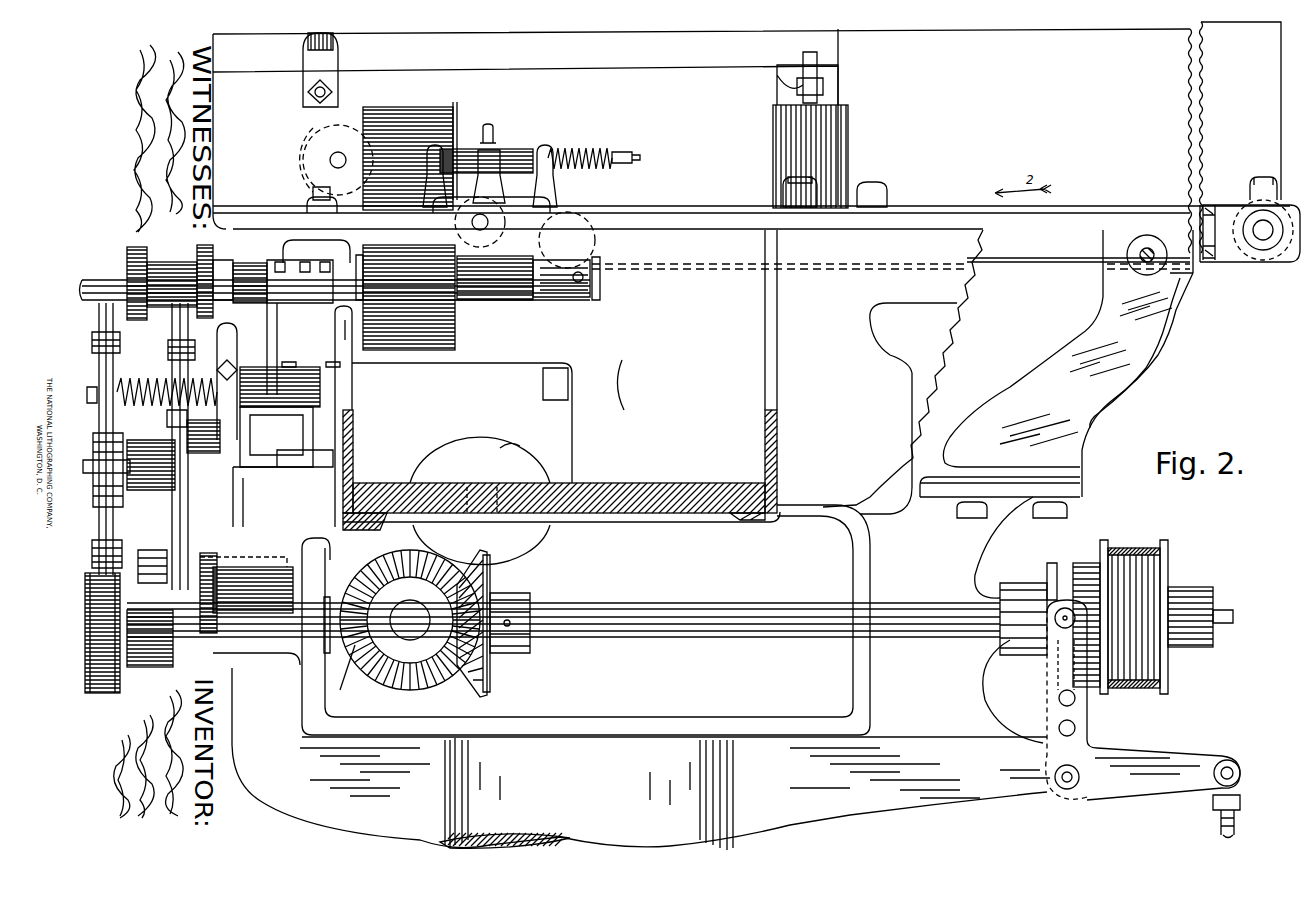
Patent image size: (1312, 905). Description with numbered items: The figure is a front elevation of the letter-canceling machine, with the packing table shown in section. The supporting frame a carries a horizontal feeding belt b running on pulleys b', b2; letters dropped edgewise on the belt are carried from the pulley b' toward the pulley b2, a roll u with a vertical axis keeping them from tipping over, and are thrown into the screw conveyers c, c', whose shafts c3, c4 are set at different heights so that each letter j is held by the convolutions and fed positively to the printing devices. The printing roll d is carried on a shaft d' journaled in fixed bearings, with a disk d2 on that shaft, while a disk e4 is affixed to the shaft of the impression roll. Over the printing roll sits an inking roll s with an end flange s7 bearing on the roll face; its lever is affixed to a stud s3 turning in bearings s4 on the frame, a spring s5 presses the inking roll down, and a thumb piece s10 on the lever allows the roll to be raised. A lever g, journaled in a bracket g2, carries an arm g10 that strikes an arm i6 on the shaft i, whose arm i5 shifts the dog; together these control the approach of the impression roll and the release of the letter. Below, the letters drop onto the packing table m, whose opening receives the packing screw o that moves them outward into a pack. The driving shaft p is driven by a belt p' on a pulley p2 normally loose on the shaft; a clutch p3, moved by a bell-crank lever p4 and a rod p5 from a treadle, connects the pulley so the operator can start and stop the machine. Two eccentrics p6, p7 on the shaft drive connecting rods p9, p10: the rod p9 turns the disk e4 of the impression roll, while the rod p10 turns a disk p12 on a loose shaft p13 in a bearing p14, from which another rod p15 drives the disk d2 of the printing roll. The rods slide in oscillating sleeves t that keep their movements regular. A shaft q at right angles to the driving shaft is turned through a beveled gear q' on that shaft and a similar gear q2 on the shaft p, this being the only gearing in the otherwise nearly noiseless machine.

The supporting frame a is at (1056, 486).
The feeding belt b is at (751, 360).
The belt pulley b' is at (1252, 221).
The belt-carrying pulley b2 is at (600, 262).
The screw conveyer c is at (567, 228).
The screw conveyer c' is at (287, 154).
The screw shaft c3 is at (456, 223).
The screw shaft c4 is at (340, 150).
The printing roll d is at (335, 295).
The printing roll shaft d' is at (355, 344).
The disk d2 is at (198, 252).
The disk e4 is at (129, 255).
The lever g is at (288, 383).
The bracket g2 is at (160, 378).
The arm g10 is at (262, 371).
The shaft i is at (300, 337).
The arm i5 is at (333, 362).
The arm i6 is at (288, 362).
The letter j is at (525, 370).
The packing table m is at (620, 492).
The packing screw o is at (520, 448).
The driving shaft p is at (587, 613).
The belt p' is at (1134, 601).
The pulley p2 is at (1175, 592).
The clutch p3 is at (1085, 565).
The bell-crank lever p4 is at (1090, 736).
The rod p5 is at (1213, 818).
The eccentric p6 is at (100, 693).
The eccentric p7 is at (160, 550).
The connecting rod p9 is at (115, 362).
The connecting rod p10 is at (150, 668).
The disk p12 is at (235, 540).
The loose shaft p13 is at (230, 567).
The bearing p14 is at (293, 570).
The connecting rod p15 is at (197, 355).
The shaft q is at (410, 639).
The beveled gear q' is at (335, 711).
The beveled gear q2 is at (490, 680).
The inking roll s is at (405, 122).
The stud s3 is at (622, 151).
The bearings s4 is at (452, 145).
The spring s5 is at (581, 148).
The flange s7 is at (458, 110).
The thumb piece s10 is at (489, 158).
The sleeves t is at (168, 423).
The roll u is at (848, 148).